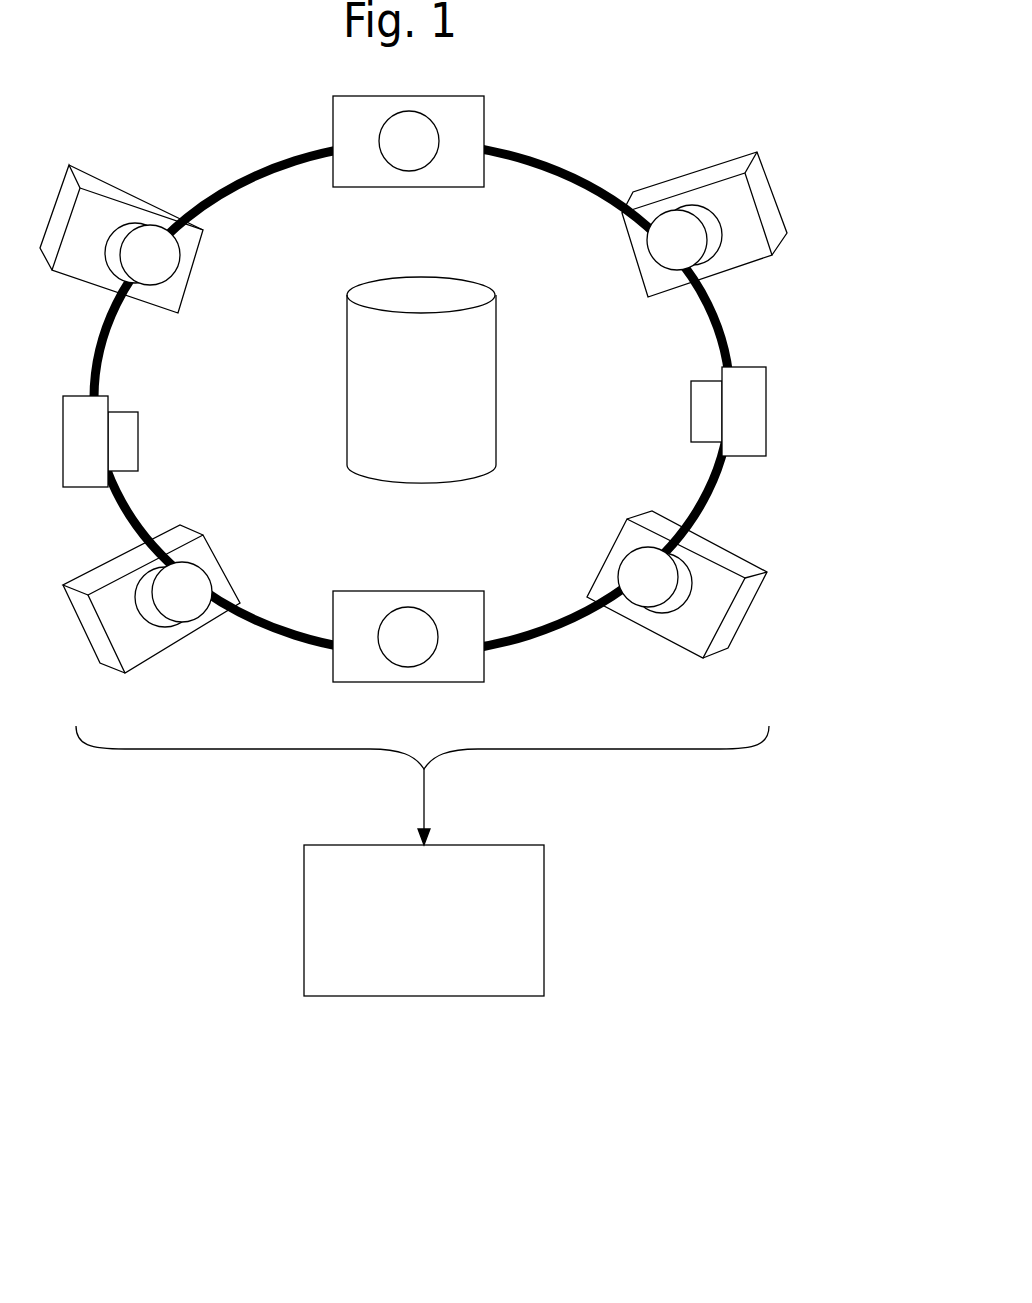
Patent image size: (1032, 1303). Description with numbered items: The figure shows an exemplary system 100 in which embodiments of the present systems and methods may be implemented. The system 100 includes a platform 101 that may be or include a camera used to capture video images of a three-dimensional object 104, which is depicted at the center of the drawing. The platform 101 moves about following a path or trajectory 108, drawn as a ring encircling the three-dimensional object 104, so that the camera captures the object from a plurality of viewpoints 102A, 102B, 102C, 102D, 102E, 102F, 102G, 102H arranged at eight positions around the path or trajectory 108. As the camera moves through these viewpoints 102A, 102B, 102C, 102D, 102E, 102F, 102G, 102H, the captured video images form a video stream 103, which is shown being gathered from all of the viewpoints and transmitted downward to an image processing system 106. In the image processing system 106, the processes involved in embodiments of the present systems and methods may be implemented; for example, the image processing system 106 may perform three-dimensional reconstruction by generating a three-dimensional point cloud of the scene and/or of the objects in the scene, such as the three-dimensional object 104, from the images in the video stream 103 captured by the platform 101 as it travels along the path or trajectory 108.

The system 100 is at (476, 670).
The platform 101 is at (453, 375).
The viewpoint 102A is at (465, 137).
The viewpoint 102B is at (744, 205).
The viewpoint 102C is at (778, 390).
The viewpoint 102D is at (713, 503).
The viewpoint 102E is at (443, 615).
The viewpoint 102F is at (195, 589).
The viewpoint 102G is at (159, 436).
The viewpoint 102H is at (178, 239).
The video stream 103 is at (422, 785).
The three-dimensional (3D) object 104 is at (421, 380).
The image processing system 106 is at (424, 920).
The path or trajectory 108 is at (412, 383).